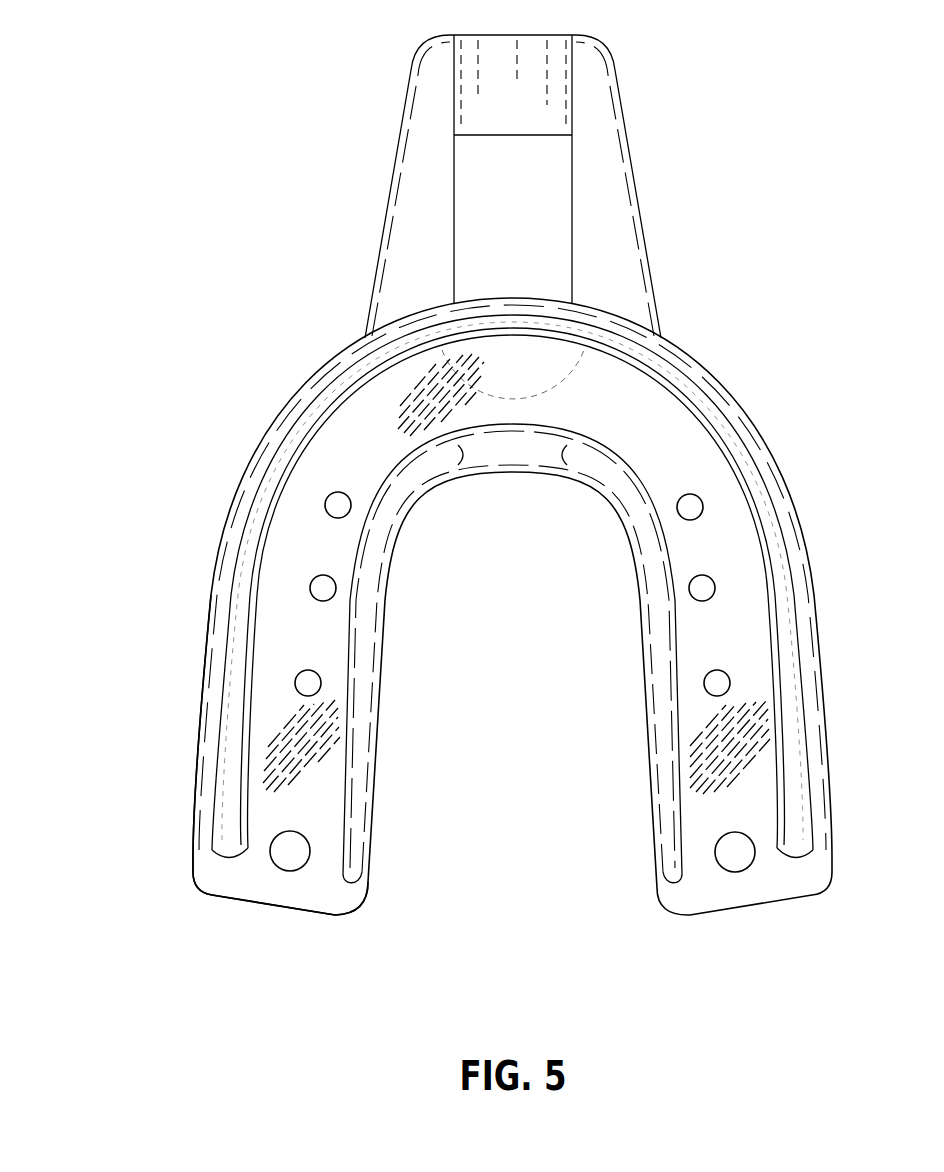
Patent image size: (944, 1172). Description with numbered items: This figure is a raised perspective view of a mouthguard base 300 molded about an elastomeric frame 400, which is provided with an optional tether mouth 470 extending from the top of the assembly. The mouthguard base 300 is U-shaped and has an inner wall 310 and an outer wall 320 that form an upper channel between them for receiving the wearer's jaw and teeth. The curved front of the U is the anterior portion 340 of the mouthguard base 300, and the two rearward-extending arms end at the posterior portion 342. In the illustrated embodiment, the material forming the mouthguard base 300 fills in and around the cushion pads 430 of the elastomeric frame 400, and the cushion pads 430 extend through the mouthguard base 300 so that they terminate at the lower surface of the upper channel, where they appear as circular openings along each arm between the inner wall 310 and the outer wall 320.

The mouthguard base 300 is at (622, 640).
The inner wall 310 is at (360, 698).
The outer wall 320 is at (247, 545).
The anterior portion 340 is at (335, 331).
The posterior portion 342 is at (176, 840).
The elastomeric frame 400 is at (205, 281).
The cushion pad 430 is at (296, 683).
The tether mouth 470 is at (403, 97).